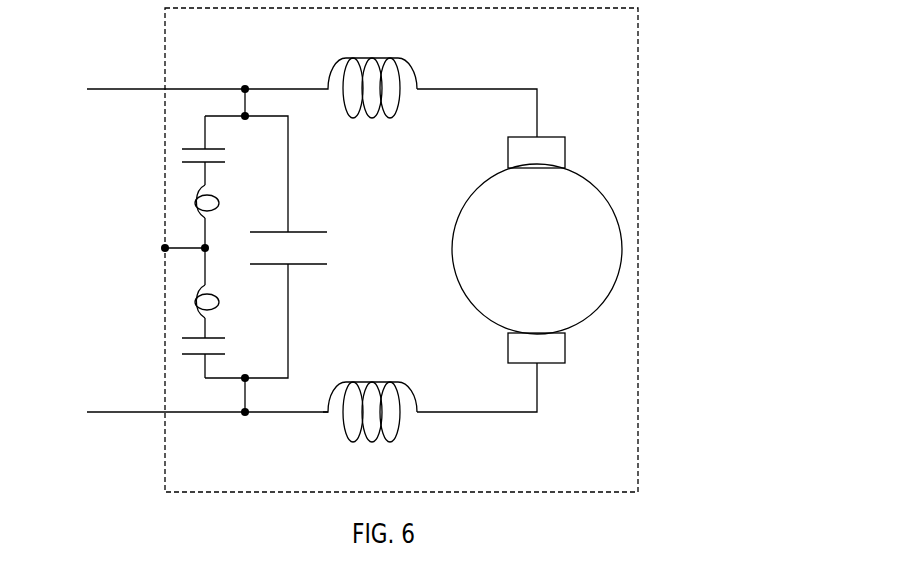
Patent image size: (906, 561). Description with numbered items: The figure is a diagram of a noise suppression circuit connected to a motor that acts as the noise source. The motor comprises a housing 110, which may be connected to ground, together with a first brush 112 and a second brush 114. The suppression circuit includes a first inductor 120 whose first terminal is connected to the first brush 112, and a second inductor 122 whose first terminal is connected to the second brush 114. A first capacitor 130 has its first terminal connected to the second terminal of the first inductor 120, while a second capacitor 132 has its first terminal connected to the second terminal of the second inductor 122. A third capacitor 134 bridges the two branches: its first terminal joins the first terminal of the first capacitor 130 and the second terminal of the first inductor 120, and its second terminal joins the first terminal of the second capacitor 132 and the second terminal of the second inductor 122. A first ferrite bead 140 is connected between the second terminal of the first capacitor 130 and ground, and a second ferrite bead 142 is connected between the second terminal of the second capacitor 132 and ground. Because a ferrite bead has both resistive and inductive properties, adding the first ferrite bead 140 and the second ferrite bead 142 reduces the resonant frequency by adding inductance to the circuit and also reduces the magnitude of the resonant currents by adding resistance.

The housing 110 is at (640, 52).
The first brush 112 is at (542, 150).
The second brush 114 is at (542, 348).
The first inductor 120 is at (397, 60).
The second inductor 122 is at (398, 427).
The first capacitor 130 is at (195, 150).
The second capacitor 132 is at (190, 345).
The third capacitor 134 is at (305, 227).
The first ferrite bead 140 is at (190, 210).
The second ferrite bead 142 is at (195, 298).